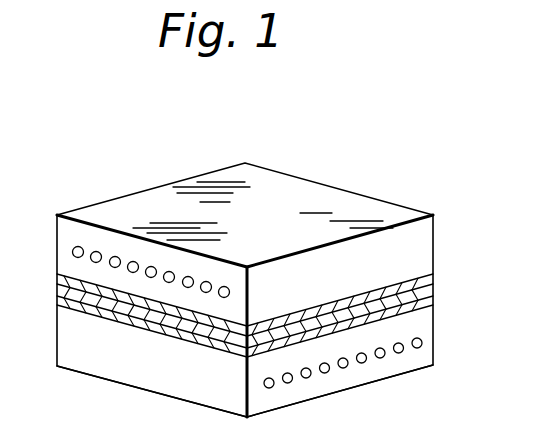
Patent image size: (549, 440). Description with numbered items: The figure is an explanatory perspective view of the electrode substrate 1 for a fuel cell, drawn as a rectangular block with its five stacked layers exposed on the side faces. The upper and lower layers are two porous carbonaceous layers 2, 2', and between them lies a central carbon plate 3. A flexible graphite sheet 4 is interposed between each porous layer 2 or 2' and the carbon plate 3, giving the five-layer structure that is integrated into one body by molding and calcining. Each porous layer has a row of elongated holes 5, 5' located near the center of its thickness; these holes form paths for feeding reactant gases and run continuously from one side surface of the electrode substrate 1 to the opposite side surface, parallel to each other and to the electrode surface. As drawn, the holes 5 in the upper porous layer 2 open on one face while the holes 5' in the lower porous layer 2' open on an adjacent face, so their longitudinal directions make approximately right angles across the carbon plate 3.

The electrode substrate 1 is at (46, 218).
The porous carbonaceous layer 2 is at (263, 254).
The porous carbonaceous layer 2' is at (267, 375).
The carbon plate 3 is at (434, 294).
The flexible graphite sheet 4 is at (434, 280).
The elongated holes 5 is at (150, 236).
The elongated holes 5' is at (343, 381).